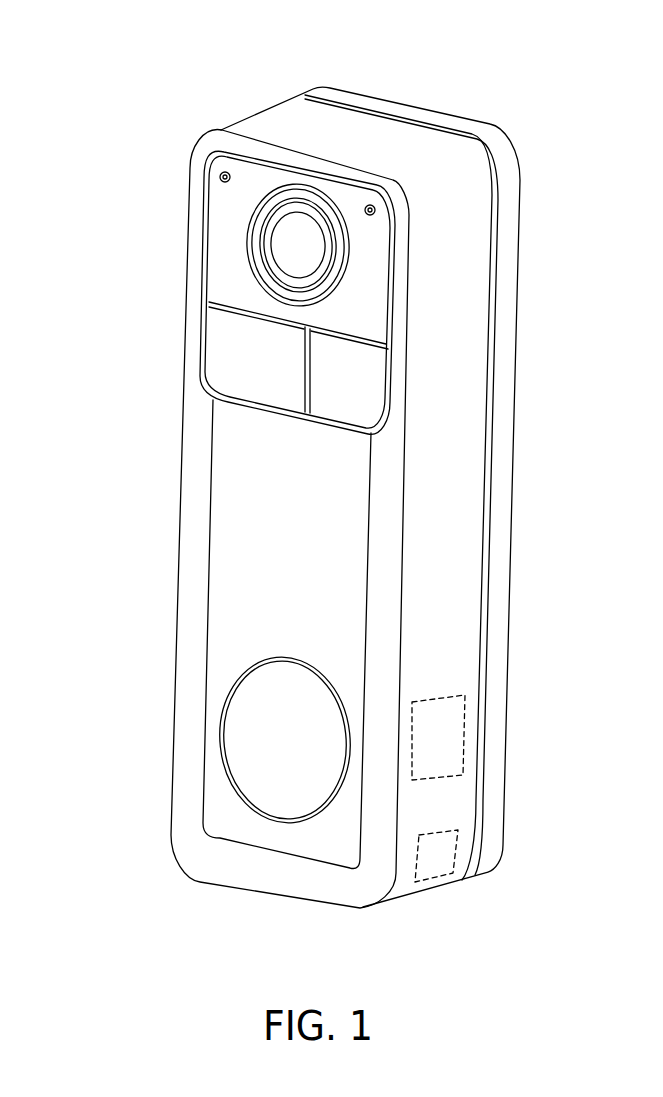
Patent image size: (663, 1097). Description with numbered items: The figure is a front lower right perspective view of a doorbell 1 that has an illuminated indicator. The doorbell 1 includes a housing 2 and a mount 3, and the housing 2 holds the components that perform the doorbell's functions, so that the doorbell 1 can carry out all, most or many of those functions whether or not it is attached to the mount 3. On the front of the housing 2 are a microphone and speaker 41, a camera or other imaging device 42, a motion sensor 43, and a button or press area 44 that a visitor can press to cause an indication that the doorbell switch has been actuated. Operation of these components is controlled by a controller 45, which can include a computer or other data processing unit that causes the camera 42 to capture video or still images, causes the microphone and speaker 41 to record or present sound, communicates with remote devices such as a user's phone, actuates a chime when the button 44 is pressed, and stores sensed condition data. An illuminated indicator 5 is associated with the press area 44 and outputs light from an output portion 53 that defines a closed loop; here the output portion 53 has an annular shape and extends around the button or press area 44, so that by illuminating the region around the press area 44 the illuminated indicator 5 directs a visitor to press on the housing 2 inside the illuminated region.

The doorbell 1 is at (62, 65).
The housing 2 is at (190, 516).
The mount 3 is at (507, 428).
The illuminated indicator 5 is at (276, 824).
The microphone and speaker 41 is at (437, 853).
The camera 42 is at (277, 248).
The motion sensor 43 is at (253, 360).
The button or press area 44 is at (273, 752).
The controller 45 is at (450, 733).
The output portion 53 is at (240, 795).